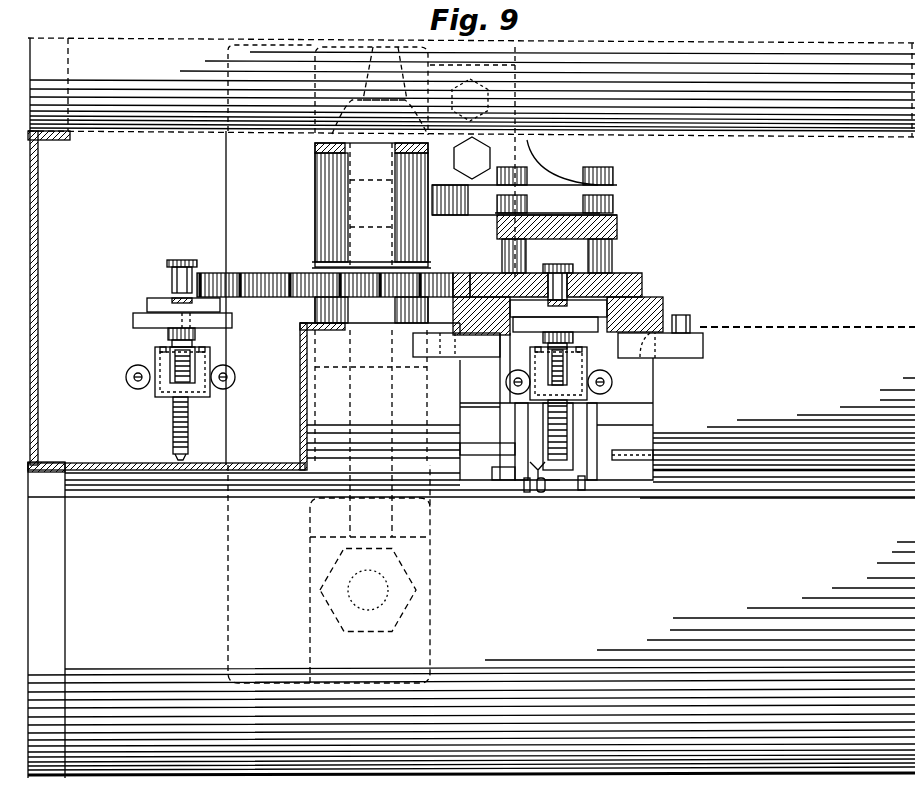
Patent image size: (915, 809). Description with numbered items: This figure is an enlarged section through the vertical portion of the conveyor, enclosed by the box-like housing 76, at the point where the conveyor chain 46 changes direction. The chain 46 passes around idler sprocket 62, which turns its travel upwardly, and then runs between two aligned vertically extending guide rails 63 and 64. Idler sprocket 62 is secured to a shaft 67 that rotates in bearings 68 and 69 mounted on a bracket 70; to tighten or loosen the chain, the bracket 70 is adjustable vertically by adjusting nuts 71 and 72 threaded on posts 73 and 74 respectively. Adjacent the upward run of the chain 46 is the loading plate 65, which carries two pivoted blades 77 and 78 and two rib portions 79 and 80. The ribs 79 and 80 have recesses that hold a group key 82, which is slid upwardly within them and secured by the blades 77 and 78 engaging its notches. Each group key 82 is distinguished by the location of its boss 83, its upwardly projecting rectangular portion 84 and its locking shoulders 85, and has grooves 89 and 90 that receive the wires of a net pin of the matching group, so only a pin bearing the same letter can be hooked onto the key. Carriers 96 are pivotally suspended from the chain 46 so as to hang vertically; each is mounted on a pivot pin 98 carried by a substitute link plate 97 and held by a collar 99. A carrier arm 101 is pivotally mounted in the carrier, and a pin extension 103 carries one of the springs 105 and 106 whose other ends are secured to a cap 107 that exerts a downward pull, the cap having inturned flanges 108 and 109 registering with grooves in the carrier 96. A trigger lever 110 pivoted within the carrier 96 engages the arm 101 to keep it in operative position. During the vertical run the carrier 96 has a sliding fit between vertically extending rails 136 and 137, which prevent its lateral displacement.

The conveyor chain 46 is at (167, 275).
The idler sprocket 62 is at (278, 273).
The guide rail 63 is at (492, 276).
The guide rail 64 is at (642, 285).
The loading plate 65 is at (655, 426).
The shaft 67 is at (348, 155).
The bearing 68 is at (300, 400).
The bearing 69 is at (355, 160).
The bracket 70 is at (312, 552).
The adjusting nut 71 is at (330, 576).
The adjusting nut 72 is at (375, 47).
The post 73 is at (336, 606).
The post 74 is at (402, 47).
The housing 76 is at (800, 70).
The pivoted blade 77 is at (476, 450).
The pivoted blade 78 is at (645, 456).
The rib portion 79 is at (515, 428).
The rib portion 80 is at (598, 430).
The group key 82 is at (501, 490).
The boss 83 is at (541, 492).
The rectangular portion 84 is at (537, 468).
The locking shoulder 85 is at (552, 484).
The groove 89 is at (527, 492).
The groove 90 is at (583, 490).
The carrier 96 is at (128, 324).
The substitute link plate 97 is at (147, 305).
The pivot pin 98 is at (168, 334).
The collar 99 is at (175, 345).
The carrier arm 101 is at (173, 437).
The pin extension 103 is at (136, 380).
The spring 105 is at (516, 383).
The spring 106 is at (235, 377).
The cap 107 is at (145, 388).
The inturned flange 108 is at (155, 355).
The inturned flange 109 is at (205, 350).
The trigger lever 110 is at (182, 372).
The vertically extending rail 136 is at (455, 340).
The vertically extending rail 137 is at (690, 320).